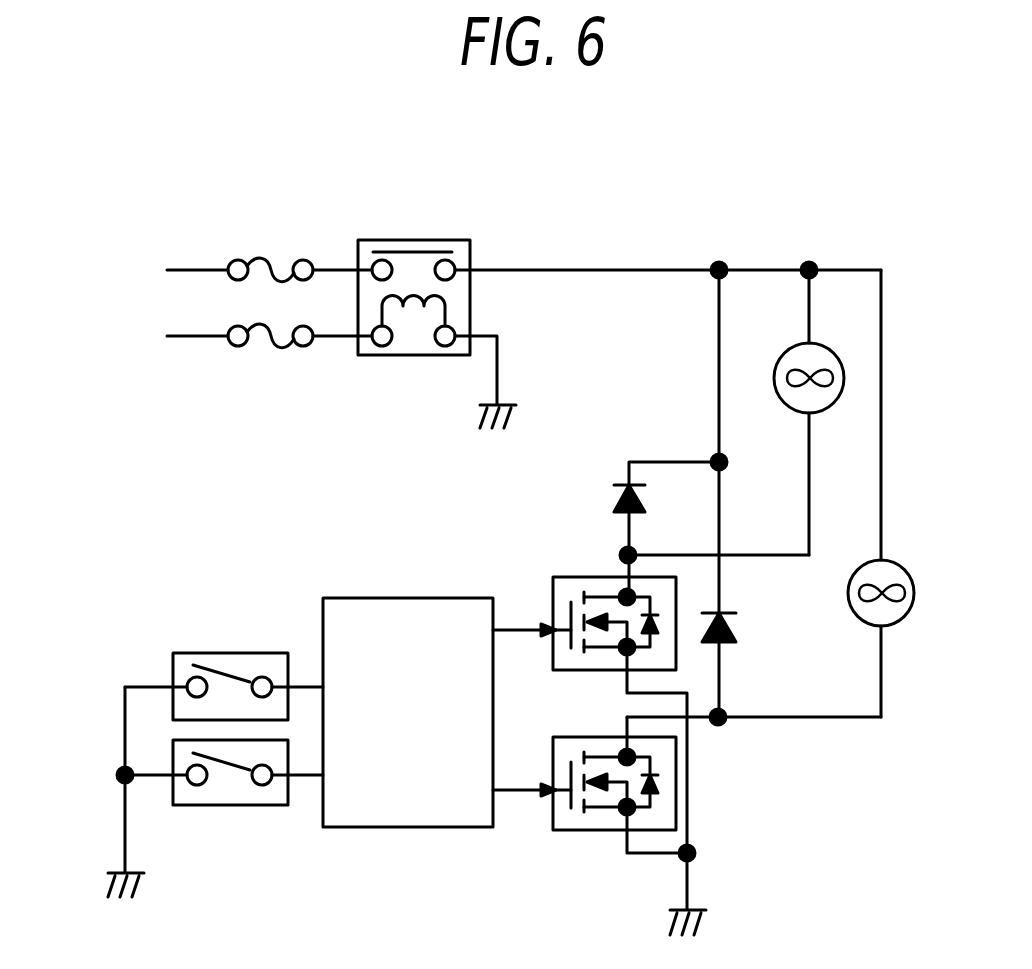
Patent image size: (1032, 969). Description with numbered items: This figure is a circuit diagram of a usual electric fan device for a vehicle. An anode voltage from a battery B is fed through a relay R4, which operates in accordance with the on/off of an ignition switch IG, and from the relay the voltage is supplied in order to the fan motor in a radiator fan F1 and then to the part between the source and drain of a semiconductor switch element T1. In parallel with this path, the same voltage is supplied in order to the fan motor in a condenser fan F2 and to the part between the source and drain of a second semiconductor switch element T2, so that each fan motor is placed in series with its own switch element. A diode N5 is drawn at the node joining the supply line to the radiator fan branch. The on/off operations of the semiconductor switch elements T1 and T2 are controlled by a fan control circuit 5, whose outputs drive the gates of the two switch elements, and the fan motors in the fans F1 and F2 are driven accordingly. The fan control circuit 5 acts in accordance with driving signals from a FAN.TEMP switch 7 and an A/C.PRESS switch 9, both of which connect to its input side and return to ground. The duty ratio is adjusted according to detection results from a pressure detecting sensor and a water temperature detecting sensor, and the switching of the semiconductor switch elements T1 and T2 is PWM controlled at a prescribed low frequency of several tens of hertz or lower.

The battery B is at (255, 271).
The ignition switch IG is at (249, 337).
The relay R4 is at (413, 240).
The radiator fan F1 is at (845, 377).
The condenser fan F2 is at (913, 593).
The diode N5 is at (636, 549).
The semiconductor switch element T1 is at (593, 577).
The semiconductor switch element T2 is at (590, 830).
The fan control circuit 5 is at (408, 598).
The FAN.TEMP switch 7 is at (225, 653).
The A/C.PRESS switch 9 is at (225, 805).